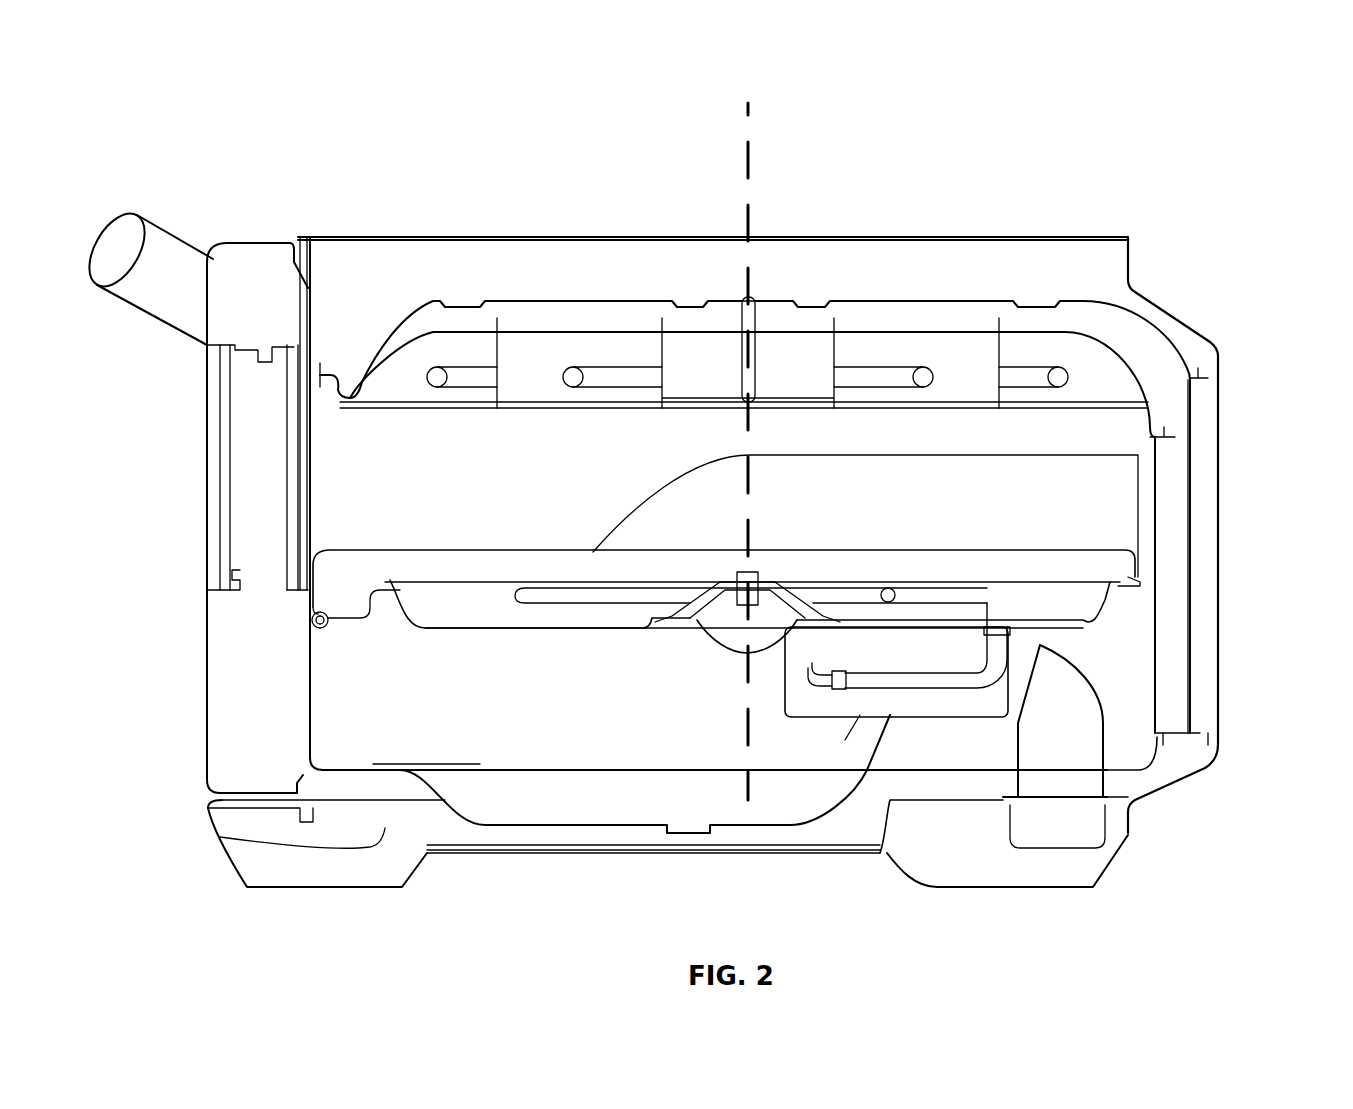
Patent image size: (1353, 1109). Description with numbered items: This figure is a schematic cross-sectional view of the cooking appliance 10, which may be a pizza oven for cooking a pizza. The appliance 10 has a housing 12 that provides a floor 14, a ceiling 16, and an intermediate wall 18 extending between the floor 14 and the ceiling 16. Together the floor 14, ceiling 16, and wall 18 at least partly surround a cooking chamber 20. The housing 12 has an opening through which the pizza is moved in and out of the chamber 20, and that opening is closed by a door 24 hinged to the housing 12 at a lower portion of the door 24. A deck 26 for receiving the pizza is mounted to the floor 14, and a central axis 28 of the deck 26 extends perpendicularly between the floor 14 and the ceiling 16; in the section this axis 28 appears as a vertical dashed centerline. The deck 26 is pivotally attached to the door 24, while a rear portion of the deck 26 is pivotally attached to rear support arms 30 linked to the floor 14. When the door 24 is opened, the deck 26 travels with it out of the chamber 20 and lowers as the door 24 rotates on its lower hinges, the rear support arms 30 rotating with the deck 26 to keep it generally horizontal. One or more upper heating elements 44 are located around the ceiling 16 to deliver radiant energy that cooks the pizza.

The cooking appliance 10 is at (207, 202).
The housing 12 is at (1205, 432).
The floor 14 is at (393, 788).
The ceiling 16 is at (1065, 333).
The intermediate wall 18 is at (1212, 493).
The cooking chamber 20 is at (630, 470).
The door 24 is at (227, 653).
The deck 26 is at (385, 537).
The central axis 28 is at (750, 228).
The rear support arms 30 is at (857, 743).
The upper heating elements 44 is at (878, 378).